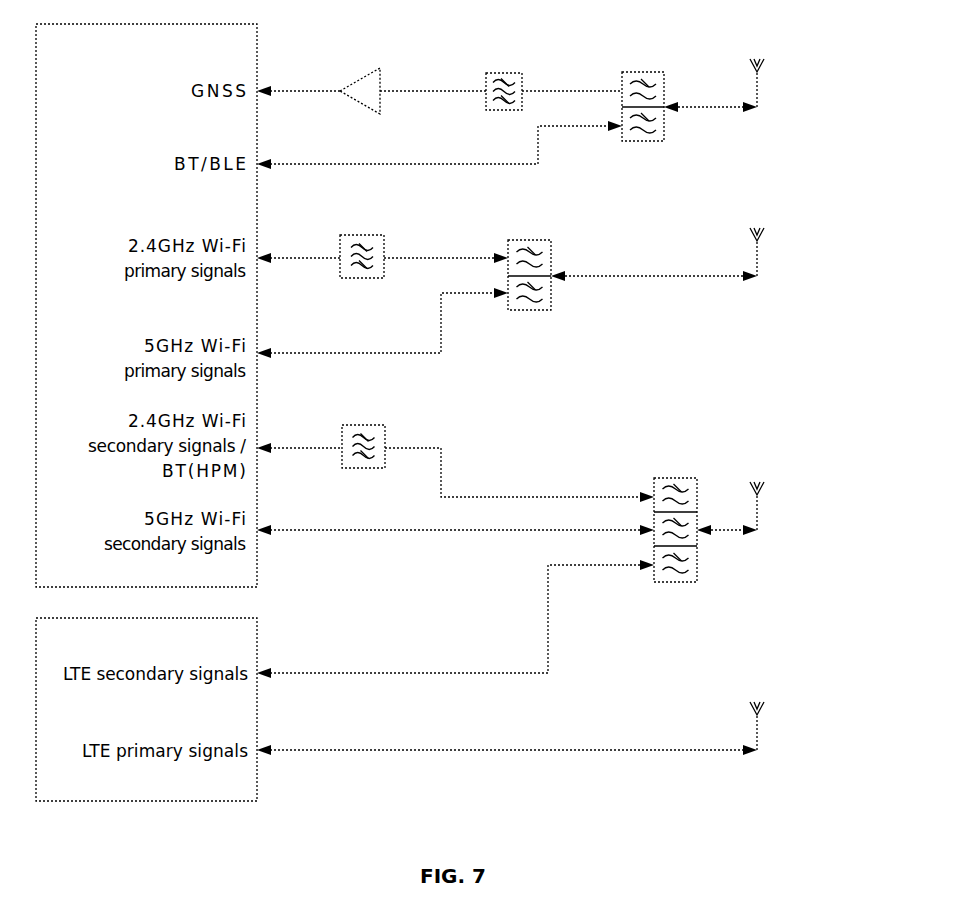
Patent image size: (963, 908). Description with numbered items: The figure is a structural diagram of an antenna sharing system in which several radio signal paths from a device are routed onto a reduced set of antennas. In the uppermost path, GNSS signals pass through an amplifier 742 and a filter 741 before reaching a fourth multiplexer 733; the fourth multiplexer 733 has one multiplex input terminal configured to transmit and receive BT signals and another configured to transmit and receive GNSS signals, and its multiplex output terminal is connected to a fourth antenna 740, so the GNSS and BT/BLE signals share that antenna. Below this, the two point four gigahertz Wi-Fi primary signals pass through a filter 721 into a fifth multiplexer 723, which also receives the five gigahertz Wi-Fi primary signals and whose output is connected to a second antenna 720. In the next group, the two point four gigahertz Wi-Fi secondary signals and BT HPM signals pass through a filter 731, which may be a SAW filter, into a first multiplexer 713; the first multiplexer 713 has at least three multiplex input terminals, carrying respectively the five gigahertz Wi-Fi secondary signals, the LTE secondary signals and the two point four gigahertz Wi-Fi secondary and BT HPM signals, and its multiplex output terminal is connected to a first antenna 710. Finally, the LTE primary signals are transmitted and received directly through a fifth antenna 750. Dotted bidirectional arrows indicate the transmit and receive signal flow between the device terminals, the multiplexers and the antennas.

The first antenna 710 is at (762, 507).
The first multiplexer 713 is at (672, 478).
The second antenna 720 is at (762, 254).
The filter 721 is at (363, 235).
The fifth multiplexer 723 is at (533, 240).
The filter 731 is at (368, 425).
The fourth multiplexer 733 is at (645, 70).
The fourth antenna 740 is at (762, 88).
The filter 741 is at (505, 72).
The amplifier 742 is at (358, 75).
The fifth antenna 750 is at (762, 738).